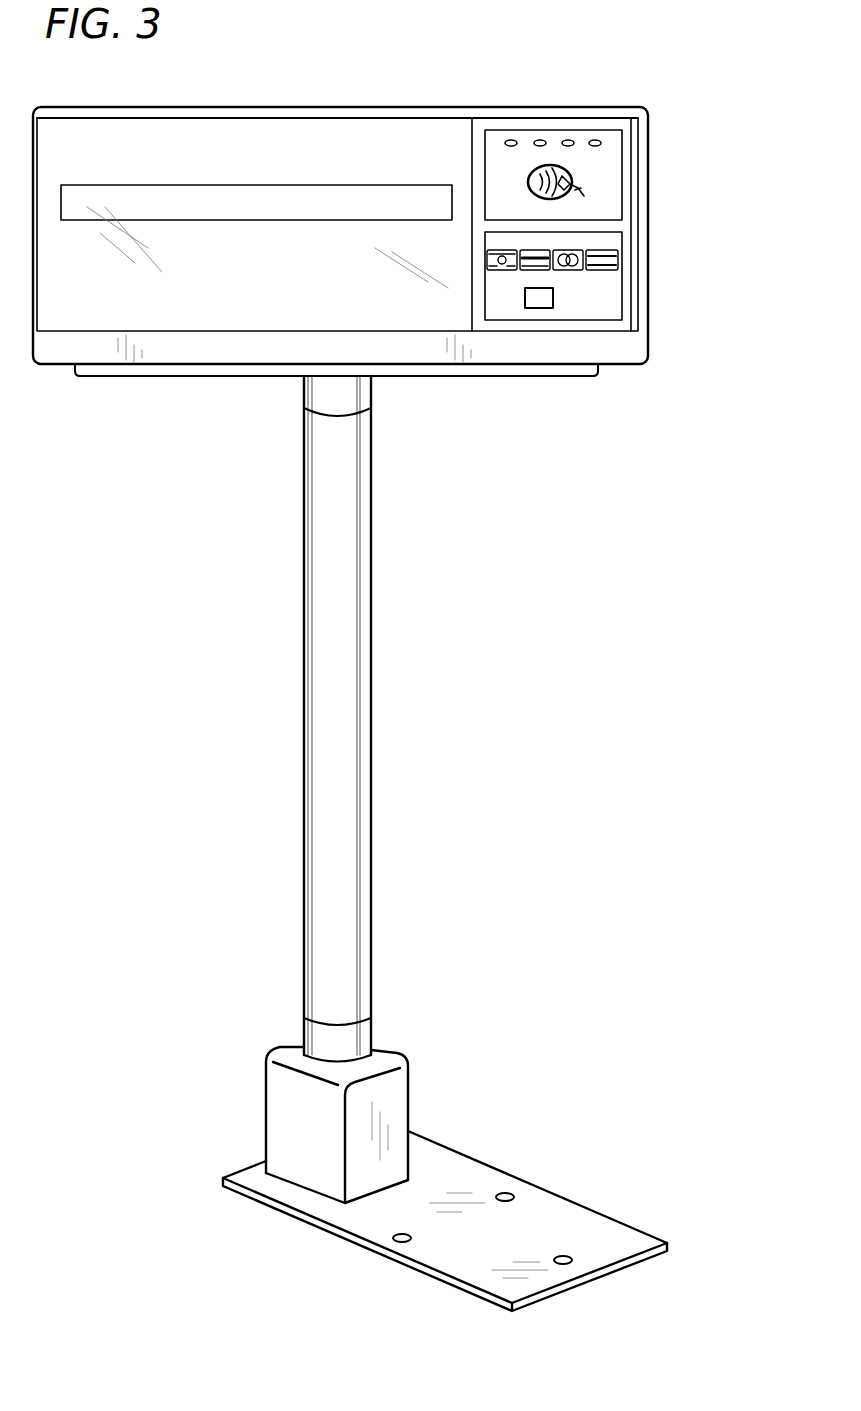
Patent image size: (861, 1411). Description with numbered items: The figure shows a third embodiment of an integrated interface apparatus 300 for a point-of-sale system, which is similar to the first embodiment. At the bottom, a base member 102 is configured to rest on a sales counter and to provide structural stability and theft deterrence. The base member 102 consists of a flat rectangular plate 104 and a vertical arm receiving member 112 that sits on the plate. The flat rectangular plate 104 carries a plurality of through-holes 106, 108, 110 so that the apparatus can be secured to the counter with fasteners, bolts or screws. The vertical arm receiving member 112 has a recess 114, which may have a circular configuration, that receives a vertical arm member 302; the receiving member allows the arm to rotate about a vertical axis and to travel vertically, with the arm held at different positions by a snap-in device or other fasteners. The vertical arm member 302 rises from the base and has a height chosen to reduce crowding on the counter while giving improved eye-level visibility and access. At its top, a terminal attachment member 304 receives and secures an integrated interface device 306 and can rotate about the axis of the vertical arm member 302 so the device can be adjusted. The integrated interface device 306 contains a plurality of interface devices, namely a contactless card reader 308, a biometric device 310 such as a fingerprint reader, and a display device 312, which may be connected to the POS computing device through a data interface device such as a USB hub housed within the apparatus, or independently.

The integrated interface apparatus 300 is at (656, 92).
The vertical arm member 302 is at (402, 751).
The terminal attachment member 304 is at (303, 398).
The integrated interface device 306 is at (660, 376).
The contactless card reader 308 is at (560, 128).
The biometric device 310 is at (539, 308).
The display device 312 is at (275, 107).
The base member 102 is at (553, 1086).
The flat rectangular plate 104 is at (607, 1218).
The through-hole 106 is at (510, 1193).
The through-hole 108 is at (572, 1260).
The through-hole 110 is at (395, 1240).
The vertical arm receiving member 112 is at (266, 1105).
The recess 114 is at (373, 1024).